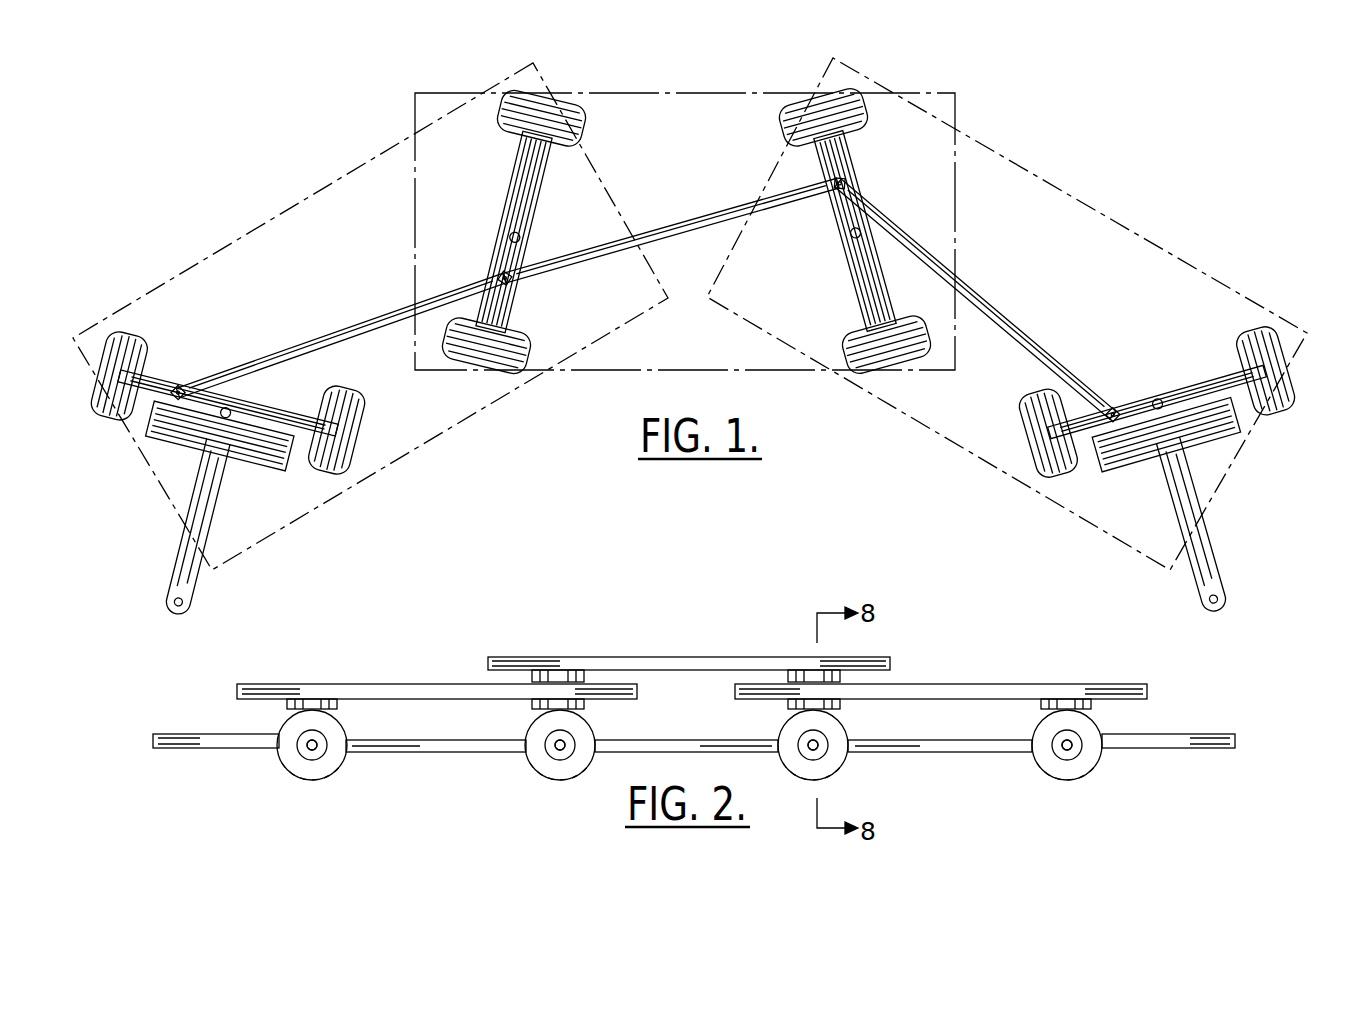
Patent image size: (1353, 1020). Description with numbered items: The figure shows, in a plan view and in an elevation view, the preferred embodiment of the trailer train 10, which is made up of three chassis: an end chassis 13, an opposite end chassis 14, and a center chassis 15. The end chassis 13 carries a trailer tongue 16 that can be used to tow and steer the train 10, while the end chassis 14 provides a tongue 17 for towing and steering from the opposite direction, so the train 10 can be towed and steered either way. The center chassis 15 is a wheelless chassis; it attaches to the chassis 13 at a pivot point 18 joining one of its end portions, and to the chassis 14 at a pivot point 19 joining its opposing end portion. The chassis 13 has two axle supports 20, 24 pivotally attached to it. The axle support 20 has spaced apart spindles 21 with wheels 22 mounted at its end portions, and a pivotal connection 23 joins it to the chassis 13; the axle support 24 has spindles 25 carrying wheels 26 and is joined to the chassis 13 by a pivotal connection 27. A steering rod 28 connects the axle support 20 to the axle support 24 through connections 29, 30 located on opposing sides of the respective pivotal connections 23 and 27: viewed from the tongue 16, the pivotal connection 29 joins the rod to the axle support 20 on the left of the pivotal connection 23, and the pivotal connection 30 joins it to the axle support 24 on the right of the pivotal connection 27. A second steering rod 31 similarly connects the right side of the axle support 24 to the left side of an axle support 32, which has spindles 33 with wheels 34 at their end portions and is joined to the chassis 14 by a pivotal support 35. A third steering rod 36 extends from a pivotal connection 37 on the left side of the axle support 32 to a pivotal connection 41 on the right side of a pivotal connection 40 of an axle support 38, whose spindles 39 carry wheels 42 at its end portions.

In FIG. 1, the trailer train 10 is at (410, 70).
In FIG. 2, the trailer train 10 is at (600, 604).
In FIG. 1, the end chassis 13 is at (312, 194).
In FIG. 2, the end chassis 13 is at (370, 688).
In FIG. 1, the end chassis 14 is at (1140, 236).
In FIG. 2, the end chassis 14 is at (1035, 688).
In FIG. 1, the center chassis 15 is at (664, 92).
In FIG. 2, the center chassis 15 is at (740, 660).
In FIG. 1, the trailer tongue 16 is at (190, 566).
In FIG. 2, the trailer tongue 16 is at (185, 735).
In FIG. 1, the tongue 17 is at (1200, 556).
In FIG. 2, the tongue 17 is at (1178, 735).
In FIG. 2, the pivot point 18 is at (546, 672).
In FIG. 2, the pivot point 19 is at (808, 672).
In FIG. 1, the axle support 20 is at (150, 378).
In FIG. 2, the spindles 21 is at (303, 752).
In FIG. 1, the wheels 22 is at (113, 418).
In FIG. 2, the wheels 22 is at (337, 770).
In FIG. 1, the pivotal connection 23 is at (231, 406).
In FIG. 1, the axle support 24 is at (517, 195).
In FIG. 2, the spindles 25 is at (549, 752).
In FIG. 1, the wheels 26 is at (568, 112).
In FIG. 2, the wheels 26 is at (558, 776).
In FIG. 1, the pivotal connection 27 is at (513, 236).
In FIG. 1, the steering rod 28 is at (356, 332).
In FIG. 2, the steering rod 28 is at (465, 742).
In FIG. 1, the pivotal connection 29 is at (196, 392).
In FIG. 1, the pivotal connection 30 is at (528, 290).
In FIG. 1, the steering rod 31 is at (698, 228).
In FIG. 2, the steering rod 31 is at (715, 748).
In FIG. 1, the axle support 32 is at (858, 166).
In FIG. 2, the spindles 33 is at (822, 752).
In FIG. 1, the wheels 34 is at (790, 112).
In FIG. 2, the wheels 34 is at (845, 742).
In FIG. 1, the pivotal support 35 is at (852, 240).
In FIG. 1, the steering rod 36 is at (1010, 318).
In FIG. 2, the steering rod 36 is at (970, 755).
In FIG. 1, the pivotal connection 37 is at (846, 186).
In FIG. 1, the axle support 38 is at (1205, 388).
In FIG. 2, the spindles 39 is at (1068, 752).
In FIG. 1, the pivotal connection 40 is at (1157, 396).
In FIG. 1, the pivotal connection 41 is at (1118, 406).
In FIG. 1, the wheels 42 is at (1040, 432).
In FIG. 2, the wheels 42 is at (1088, 765).